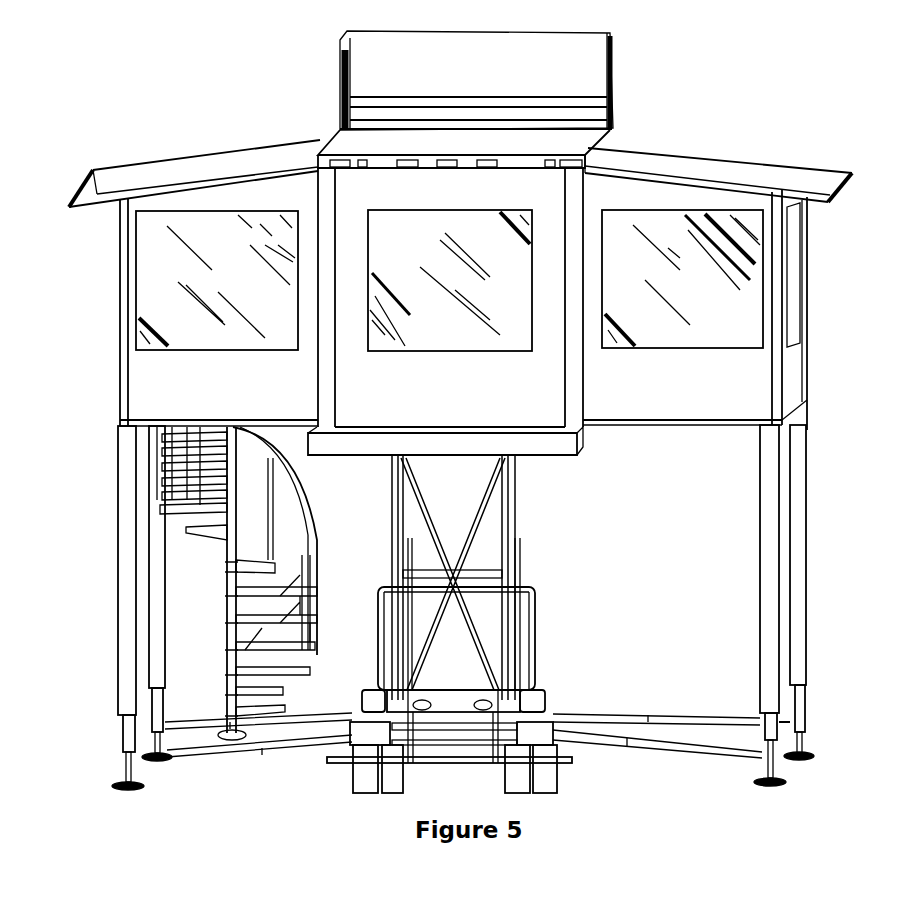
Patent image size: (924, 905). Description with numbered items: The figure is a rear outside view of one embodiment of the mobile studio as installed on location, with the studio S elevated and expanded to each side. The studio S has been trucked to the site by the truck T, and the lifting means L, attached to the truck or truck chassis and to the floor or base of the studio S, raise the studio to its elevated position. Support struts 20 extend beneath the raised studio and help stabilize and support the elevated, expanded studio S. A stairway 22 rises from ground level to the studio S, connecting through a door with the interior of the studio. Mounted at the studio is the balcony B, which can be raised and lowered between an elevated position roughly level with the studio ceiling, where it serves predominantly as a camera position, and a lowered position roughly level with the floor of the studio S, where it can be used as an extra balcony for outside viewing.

The balcony B is at (622, 121).
The studio S is at (812, 315).
The support struts 20 is at (810, 512).
The stairway 22 is at (210, 543).
The lifting means L is at (525, 532).
The truck T is at (538, 683).